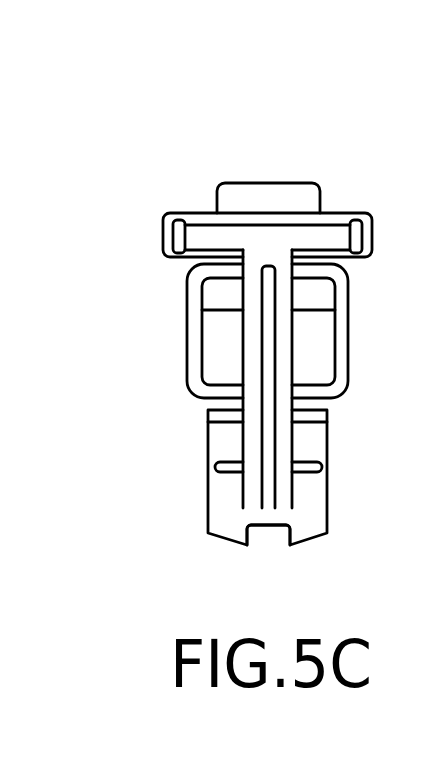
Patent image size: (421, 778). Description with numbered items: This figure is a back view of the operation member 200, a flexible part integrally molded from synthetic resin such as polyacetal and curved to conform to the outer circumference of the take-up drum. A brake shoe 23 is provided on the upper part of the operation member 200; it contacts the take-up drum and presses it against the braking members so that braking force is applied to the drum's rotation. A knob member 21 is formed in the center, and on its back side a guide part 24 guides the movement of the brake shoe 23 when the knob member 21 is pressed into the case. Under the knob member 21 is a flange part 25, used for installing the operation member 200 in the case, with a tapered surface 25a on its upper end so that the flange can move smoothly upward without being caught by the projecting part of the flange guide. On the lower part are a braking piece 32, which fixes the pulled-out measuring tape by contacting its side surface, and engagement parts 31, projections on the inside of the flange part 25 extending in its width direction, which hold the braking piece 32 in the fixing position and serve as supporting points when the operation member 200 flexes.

The operation member 200 is at (304, 109).
The brake shoe 23 is at (338, 214).
The knob member 21 is at (192, 292).
The guide part 24 is at (272, 345).
The flange part 25 is at (317, 443).
The tapered surface 25a is at (210, 415).
The engagement parts 31 is at (230, 472).
The braking piece 32 is at (305, 542).